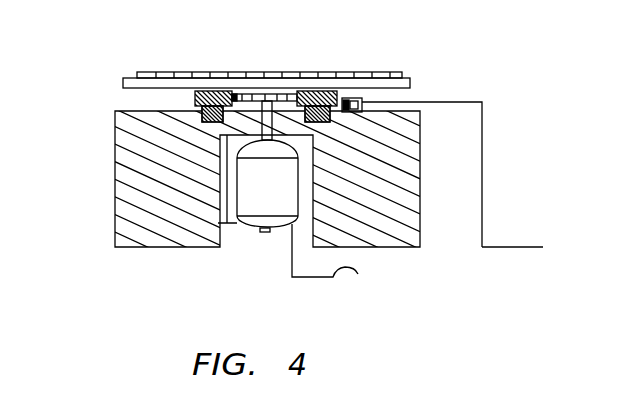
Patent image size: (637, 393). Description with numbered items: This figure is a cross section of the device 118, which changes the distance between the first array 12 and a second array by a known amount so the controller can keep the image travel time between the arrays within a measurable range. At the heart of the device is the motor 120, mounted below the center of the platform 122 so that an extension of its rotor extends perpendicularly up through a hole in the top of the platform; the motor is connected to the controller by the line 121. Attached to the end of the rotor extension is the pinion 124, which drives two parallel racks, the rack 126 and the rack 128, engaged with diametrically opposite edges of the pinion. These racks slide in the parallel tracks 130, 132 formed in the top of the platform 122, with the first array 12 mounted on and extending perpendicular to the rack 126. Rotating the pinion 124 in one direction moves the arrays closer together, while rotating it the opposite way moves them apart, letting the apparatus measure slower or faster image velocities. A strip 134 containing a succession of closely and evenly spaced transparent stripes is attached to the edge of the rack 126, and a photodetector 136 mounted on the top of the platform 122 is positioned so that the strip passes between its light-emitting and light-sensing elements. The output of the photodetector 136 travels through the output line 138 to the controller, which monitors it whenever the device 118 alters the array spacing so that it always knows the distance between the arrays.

The first array 12 is at (196, 72).
The device 118 is at (474, 35).
The motor 120 is at (250, 232).
The line 121 is at (337, 253).
The platform 122 is at (117, 151).
The pinion 124 is at (271, 95).
The rack 126 is at (337, 100).
The rack 128 is at (195, 96).
The track 130 is at (419, 134).
The track 132 is at (117, 114).
The strip 134 is at (342, 102).
The photodetector 136 is at (364, 102).
The output line 138 is at (482, 218).